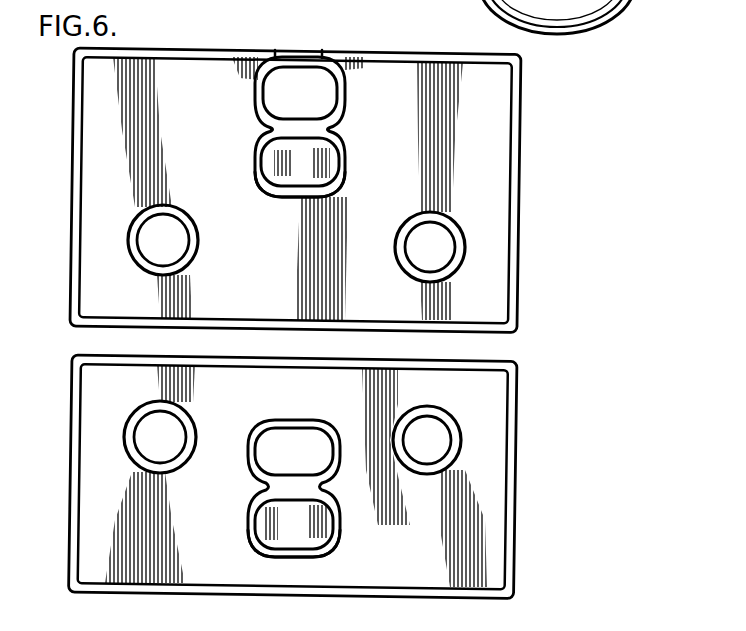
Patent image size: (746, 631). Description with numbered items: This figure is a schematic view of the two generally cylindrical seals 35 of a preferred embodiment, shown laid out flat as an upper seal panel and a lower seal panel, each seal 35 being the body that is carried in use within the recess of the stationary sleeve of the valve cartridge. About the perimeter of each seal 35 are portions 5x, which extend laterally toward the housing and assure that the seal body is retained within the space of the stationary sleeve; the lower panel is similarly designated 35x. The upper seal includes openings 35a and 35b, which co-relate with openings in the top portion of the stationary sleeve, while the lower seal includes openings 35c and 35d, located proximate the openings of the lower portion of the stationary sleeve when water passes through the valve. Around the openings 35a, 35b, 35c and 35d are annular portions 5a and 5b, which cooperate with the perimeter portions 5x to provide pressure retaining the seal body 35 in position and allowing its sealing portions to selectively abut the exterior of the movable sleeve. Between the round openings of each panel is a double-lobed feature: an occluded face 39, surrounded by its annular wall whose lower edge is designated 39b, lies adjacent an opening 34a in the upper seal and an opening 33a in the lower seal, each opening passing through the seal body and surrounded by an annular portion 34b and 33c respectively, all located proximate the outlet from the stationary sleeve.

The perimeter portions 5x is at (78, 52).
The panel member 35x is at (520, 363).
The seal body 35 is at (498, 121).
The opening 34a is at (326, 105).
The annular portion 34b is at (256, 95).
The occluded face 39 is at (278, 161).
The lower edge of double-lobed opening 39b is at (285, 193).
The annular portions 5a is at (131, 245).
The opening 35a is at (180, 250).
The opening 35b is at (436, 257).
The annular portions 5b is at (144, 412).
The opening 35c is at (153, 445).
The opening 35d is at (443, 450).
The opening 33a is at (281, 437).
The annular portion 33c is at (321, 426).